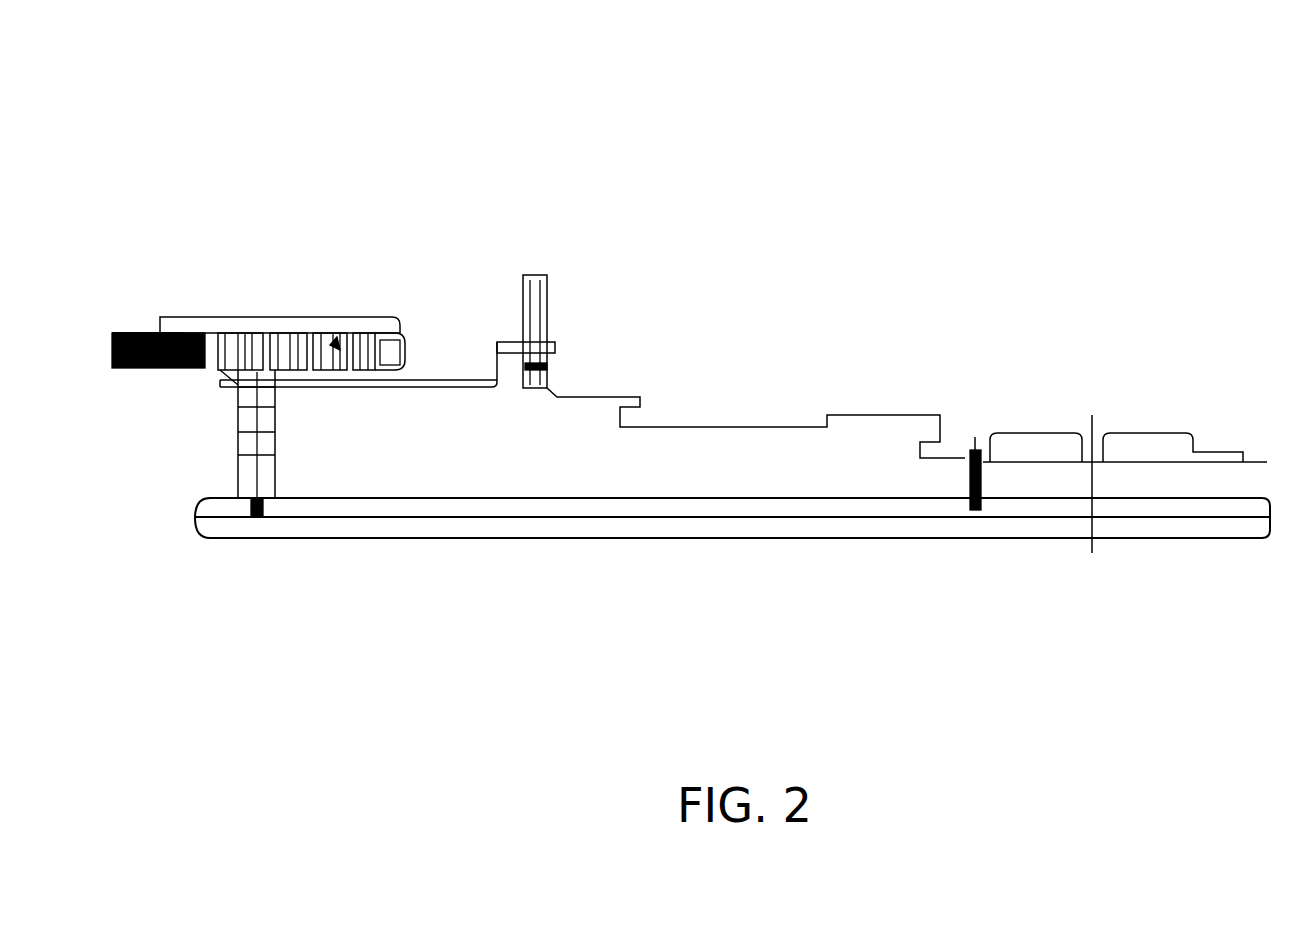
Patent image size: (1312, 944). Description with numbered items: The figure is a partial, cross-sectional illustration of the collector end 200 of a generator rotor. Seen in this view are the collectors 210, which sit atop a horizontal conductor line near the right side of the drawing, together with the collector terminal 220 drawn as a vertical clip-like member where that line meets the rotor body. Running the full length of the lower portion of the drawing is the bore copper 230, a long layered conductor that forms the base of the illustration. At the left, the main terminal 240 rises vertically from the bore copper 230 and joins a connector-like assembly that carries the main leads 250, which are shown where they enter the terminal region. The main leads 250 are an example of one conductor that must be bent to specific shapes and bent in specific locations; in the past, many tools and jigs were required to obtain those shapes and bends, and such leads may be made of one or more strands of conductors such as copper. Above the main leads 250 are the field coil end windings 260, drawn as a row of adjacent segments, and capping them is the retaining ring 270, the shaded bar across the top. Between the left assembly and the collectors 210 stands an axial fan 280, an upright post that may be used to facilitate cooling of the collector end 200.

The collector end 200 is at (1047, 88).
The collectors 210 is at (1147, 435).
The collector terminal 220 is at (963, 471).
The bore copper 230 is at (455, 533).
The main terminal 240 is at (252, 487).
The main leads 250 is at (268, 393).
The field coil end windings 260 is at (335, 337).
The retaining ring 270 is at (270, 322).
The axial fan 280 is at (538, 315).